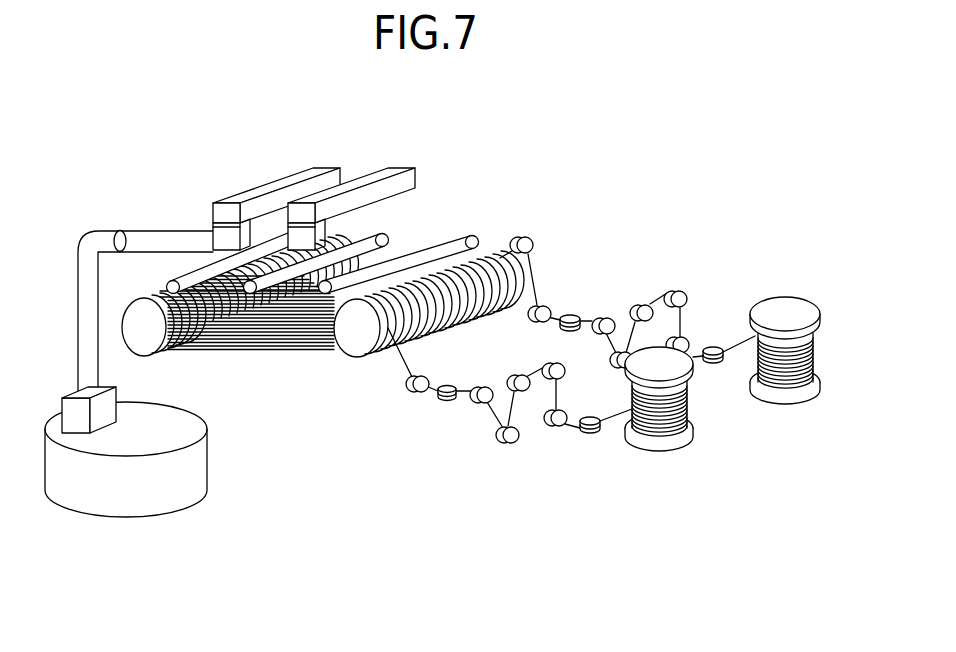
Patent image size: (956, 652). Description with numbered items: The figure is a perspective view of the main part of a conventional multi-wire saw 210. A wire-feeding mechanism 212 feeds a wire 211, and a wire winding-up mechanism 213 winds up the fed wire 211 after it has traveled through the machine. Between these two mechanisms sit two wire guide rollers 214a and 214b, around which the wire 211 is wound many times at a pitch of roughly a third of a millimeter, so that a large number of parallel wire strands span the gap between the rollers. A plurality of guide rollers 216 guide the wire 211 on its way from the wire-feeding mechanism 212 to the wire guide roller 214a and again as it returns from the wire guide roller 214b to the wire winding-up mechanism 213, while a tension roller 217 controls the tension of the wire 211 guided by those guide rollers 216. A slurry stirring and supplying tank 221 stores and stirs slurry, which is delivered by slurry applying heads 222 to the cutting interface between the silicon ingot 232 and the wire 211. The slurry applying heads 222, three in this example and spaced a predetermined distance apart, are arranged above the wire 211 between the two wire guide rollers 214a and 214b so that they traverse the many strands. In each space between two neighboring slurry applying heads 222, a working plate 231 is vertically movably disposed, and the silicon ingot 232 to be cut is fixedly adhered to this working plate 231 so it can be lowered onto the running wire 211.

The multi-wire saw 210 is at (303, 174).
The wire 211 is at (401, 364).
The wire-feeding mechanism 212 is at (778, 405).
The wire winding-up mechanism 213 is at (652, 455).
The wire guide roller 214a is at (143, 345).
The wire guide roller 214b is at (355, 347).
The guide rollers 216 is at (508, 348).
The tension roller 217 is at (622, 356).
The slurry stirring and supplying tank 221 is at (178, 500).
The slurry applying heads 222 is at (452, 237).
The working plate 231 is at (303, 174).
The silicon ingot 232 is at (229, 179).